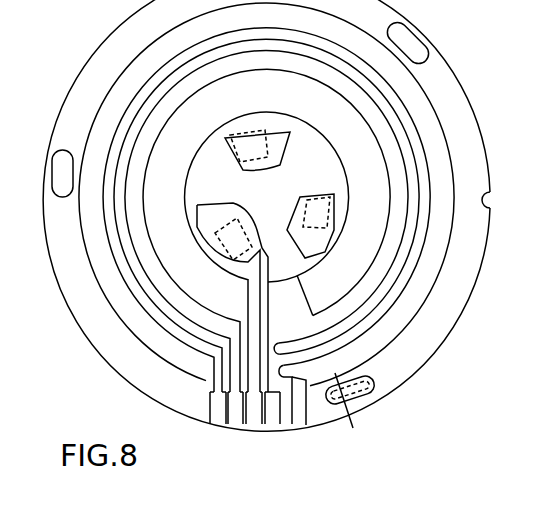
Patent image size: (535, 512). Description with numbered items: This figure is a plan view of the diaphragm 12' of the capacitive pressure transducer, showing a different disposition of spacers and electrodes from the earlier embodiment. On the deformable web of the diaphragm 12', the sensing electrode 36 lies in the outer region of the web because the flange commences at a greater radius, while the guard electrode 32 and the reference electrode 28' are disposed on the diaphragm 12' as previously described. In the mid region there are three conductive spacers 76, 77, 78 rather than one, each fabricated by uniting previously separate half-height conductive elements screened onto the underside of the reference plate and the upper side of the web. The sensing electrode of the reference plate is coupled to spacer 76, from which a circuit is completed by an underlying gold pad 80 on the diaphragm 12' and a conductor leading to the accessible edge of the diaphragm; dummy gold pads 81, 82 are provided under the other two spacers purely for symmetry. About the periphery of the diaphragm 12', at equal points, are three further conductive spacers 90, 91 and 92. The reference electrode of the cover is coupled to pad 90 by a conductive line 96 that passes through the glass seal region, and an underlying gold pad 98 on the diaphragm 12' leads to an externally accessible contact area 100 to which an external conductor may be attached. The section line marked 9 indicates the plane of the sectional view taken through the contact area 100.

The diaphragm 12' is at (286, 215).
The reference electrode 28' is at (266, 194).
The guard electrode 32 is at (420, 252).
The sensing electrode 36 is at (226, 110).
The conductive spacer 76 is at (205, 232).
The conductive spacer 77 is at (280, 128).
The conductive spacer 78 is at (331, 196).
The gold pad 80 is at (240, 217).
The dummy gold pad 81 is at (232, 157).
The dummy gold pad 82 is at (320, 222).
The conductive spacer 90 is at (380, 385).
The conductive spacer 91 is at (56, 184).
The conductive spacer 92 is at (416, 30).
The conductive line 96 is at (509, 8).
The gold pad 98 is at (365, 375).
The contact area 100 is at (301, 420).
The section line 9- 9 is at (335, 373).